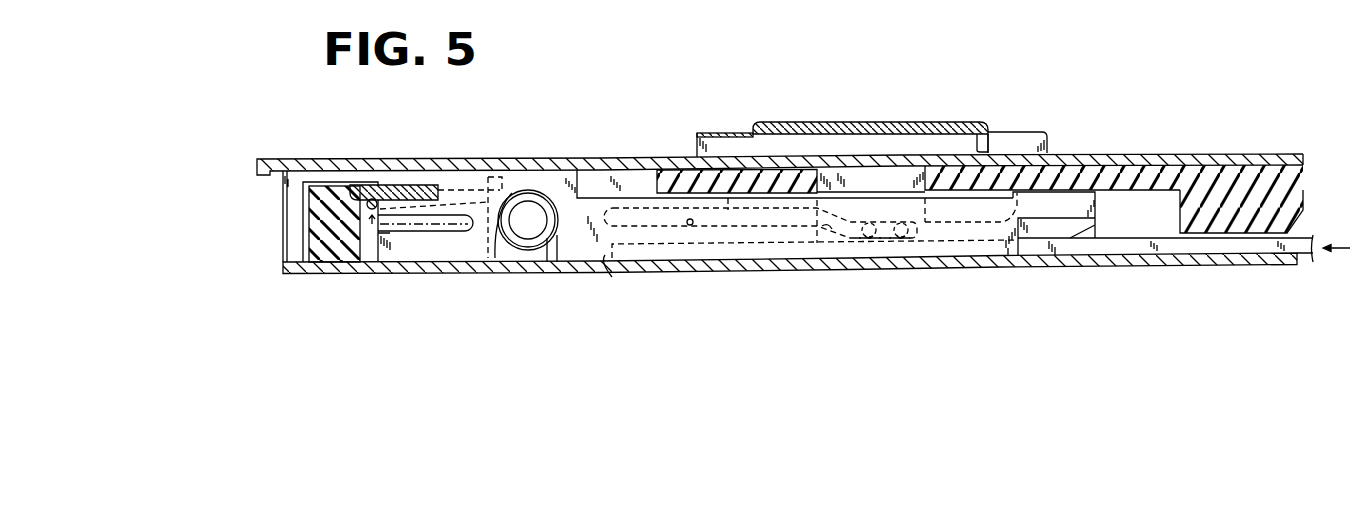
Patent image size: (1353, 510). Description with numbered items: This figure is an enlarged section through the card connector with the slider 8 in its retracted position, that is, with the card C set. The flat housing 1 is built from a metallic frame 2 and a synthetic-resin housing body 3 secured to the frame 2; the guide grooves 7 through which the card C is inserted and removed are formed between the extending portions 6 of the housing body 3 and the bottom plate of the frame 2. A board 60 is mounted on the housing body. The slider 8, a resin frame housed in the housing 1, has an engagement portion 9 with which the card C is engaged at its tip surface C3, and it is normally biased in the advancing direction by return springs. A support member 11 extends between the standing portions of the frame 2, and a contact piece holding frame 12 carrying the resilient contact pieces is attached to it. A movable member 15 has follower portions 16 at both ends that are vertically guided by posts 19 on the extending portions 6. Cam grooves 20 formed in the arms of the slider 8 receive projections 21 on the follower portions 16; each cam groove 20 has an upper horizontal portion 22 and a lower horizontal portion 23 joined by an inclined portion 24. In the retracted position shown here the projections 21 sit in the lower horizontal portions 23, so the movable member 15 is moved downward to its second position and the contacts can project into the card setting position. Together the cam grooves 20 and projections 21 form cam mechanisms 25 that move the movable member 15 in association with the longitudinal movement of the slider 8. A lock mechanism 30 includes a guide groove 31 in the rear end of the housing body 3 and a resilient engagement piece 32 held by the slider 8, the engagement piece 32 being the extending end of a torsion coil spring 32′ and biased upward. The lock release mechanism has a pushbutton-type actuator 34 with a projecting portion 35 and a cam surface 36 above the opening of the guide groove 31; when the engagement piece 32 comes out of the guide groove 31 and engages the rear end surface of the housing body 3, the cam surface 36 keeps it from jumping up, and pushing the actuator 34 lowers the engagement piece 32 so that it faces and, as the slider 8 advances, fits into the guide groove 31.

The housing 1 is at (1303, 168).
The frame 2 is at (838, 268).
The housing body 3 is at (477, 253).
The extending portions 6 is at (1283, 165).
The guide grooves 7 is at (1263, 235).
The slider 8 is at (587, 253).
The engagement portion 9 is at (605, 233).
The support member 11 is at (947, 121).
The contact piece holding frame 12 is at (1020, 131).
The movable member 15 is at (873, 167).
The follower portions 16 is at (913, 175).
The posts 19 is at (743, 213).
The cam grooves 20 is at (715, 225).
The projections 21 is at (885, 238).
The horizontal portions 22 is at (690, 225).
The horizontal portions 23 is at (907, 238).
The inclined portion 24 is at (828, 228).
The cam mechanisms 25 is at (714, 359).
The lock mechanism 30 is at (372, 250).
The guide groove 31 is at (430, 233).
The engagement piece 32 is at (372, 168).
The torsion coil spring 32′ is at (535, 190).
The actuator 34 is at (312, 217).
The projecting portion 35 is at (427, 168).
The cam surface 36 is at (352, 168).
The board 60 is at (1108, 157).
The card C is at (1317, 237).
The tip surface C3 is at (612, 280).